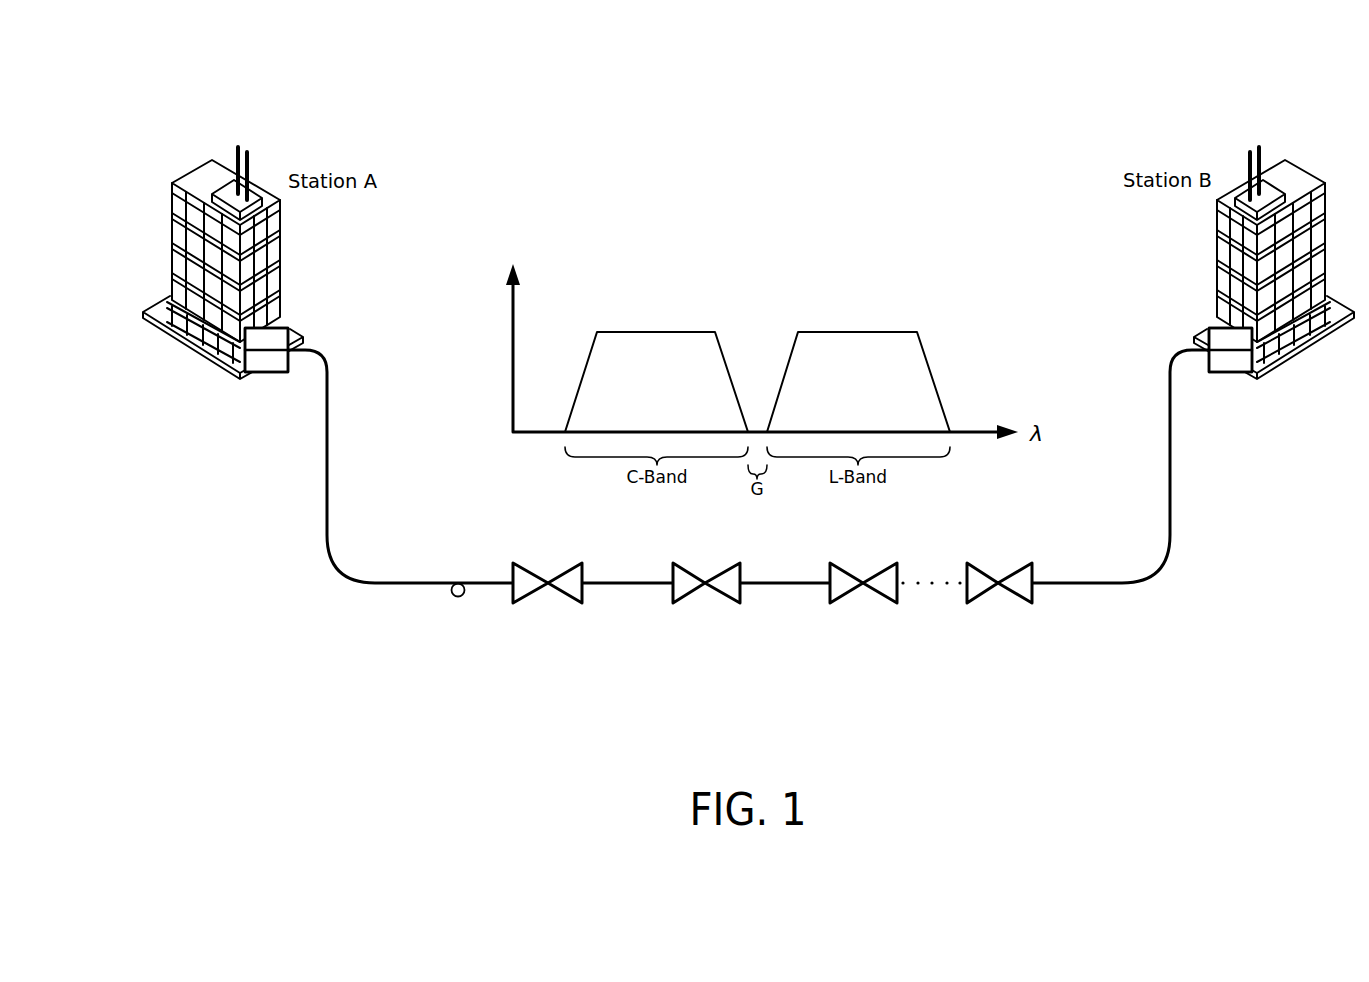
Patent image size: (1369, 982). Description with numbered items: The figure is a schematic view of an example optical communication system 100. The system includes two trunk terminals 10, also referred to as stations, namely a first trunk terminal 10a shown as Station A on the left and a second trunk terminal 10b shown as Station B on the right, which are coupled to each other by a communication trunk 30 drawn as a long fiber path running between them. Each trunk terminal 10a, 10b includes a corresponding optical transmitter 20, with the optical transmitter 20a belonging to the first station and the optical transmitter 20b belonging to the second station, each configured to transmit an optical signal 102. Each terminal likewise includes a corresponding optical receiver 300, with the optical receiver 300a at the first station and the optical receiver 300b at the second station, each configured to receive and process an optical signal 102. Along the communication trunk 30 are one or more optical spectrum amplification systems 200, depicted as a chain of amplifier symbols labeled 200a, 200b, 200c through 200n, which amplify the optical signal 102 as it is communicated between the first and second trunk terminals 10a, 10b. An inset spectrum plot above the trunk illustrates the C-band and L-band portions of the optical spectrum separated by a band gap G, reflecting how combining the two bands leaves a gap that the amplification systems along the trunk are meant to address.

The optical communication system 100 is at (1051, 103).
The trunk terminal 10 is at (748, 263).
The first trunk terminal 10a is at (281, 224).
The second trunk terminal 10b is at (1215, 223).
The optical transmitter 20 is at (748, 322).
The optical transmitter of the first trunk terminal 20a is at (287, 322).
The optical transmitter of the second trunk terminal 20b is at (1210, 325).
The optical receiver 300 is at (748, 392).
The optical receiver of the first trunk terminal 300a is at (265, 373).
The optical receiver of the second trunk terminal 300b is at (1232, 372).
The communication trunk 30 is at (402, 585).
The optical signal 102 is at (460, 584).
The optical spectrum amplification system 200 is at (789, 610).
The first optical spectrum amplification system 200a is at (548, 593).
The second optical spectrum amplification system 200b is at (705, 593).
The third optical spectrum amplification system 200c is at (863, 593).
The nth optical spectrum amplification system 200n is at (998, 593).